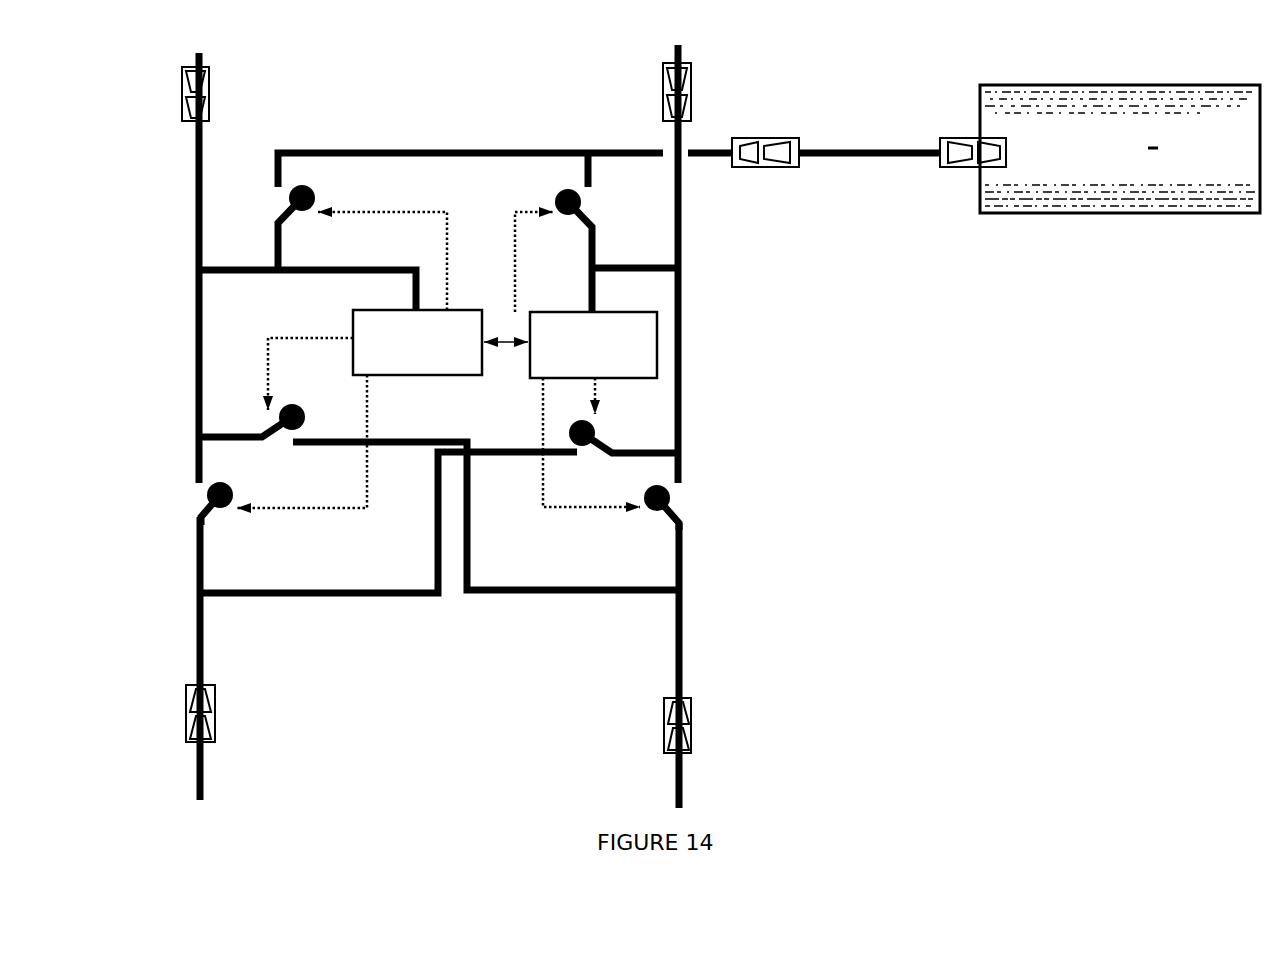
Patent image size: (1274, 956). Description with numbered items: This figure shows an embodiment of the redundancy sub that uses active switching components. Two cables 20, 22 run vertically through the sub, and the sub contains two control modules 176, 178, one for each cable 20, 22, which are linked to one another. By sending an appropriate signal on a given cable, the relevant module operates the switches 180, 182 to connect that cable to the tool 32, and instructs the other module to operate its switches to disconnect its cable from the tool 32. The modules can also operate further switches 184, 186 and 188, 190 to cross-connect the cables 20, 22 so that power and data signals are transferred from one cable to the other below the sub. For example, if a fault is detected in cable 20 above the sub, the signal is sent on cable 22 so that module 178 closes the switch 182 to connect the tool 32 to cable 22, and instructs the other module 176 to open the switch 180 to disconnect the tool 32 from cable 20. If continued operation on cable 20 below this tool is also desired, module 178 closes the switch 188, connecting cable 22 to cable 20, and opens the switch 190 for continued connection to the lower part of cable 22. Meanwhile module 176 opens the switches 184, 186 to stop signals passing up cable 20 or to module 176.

The cable 20 is at (205, 143).
The cable 22 is at (702, 118).
The tool 32 is at (1120, 149).
The control module 176 is at (440, 342).
The control module 178 is at (593, 345).
The switch 180 is at (320, 182).
The switch 182 is at (597, 202).
The switch 184 is at (258, 422).
The switch 186 is at (197, 492).
The switch 188 is at (612, 426).
The switch 190 is at (682, 494).